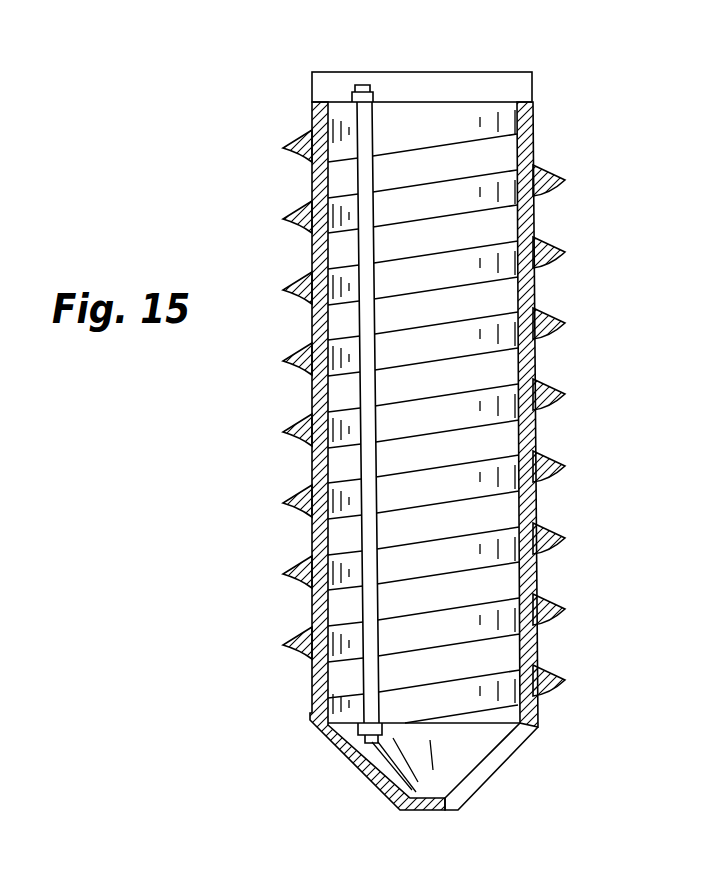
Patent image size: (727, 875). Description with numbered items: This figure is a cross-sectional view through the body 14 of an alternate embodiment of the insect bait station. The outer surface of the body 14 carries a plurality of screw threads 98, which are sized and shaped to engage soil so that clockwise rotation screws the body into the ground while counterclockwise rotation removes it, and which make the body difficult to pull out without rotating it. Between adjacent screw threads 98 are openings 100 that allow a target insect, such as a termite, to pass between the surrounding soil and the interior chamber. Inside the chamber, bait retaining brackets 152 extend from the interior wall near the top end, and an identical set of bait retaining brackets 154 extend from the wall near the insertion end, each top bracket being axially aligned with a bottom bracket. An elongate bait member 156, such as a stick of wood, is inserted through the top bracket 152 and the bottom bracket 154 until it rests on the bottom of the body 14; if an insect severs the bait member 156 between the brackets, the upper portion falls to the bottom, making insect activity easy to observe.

The body 14 is at (557, 498).
The screw threads 98 is at (284, 432).
The openings 100 is at (343, 185).
The bait retaining brackets 152 is at (370, 97).
The bait retaining brackets 154 is at (358, 723).
The elongate bait member 156 is at (363, 242).